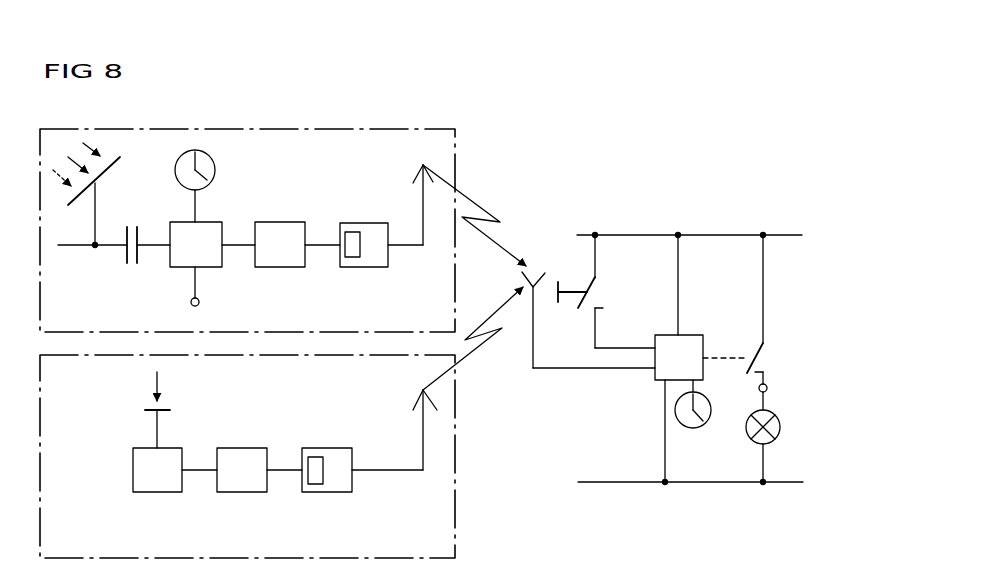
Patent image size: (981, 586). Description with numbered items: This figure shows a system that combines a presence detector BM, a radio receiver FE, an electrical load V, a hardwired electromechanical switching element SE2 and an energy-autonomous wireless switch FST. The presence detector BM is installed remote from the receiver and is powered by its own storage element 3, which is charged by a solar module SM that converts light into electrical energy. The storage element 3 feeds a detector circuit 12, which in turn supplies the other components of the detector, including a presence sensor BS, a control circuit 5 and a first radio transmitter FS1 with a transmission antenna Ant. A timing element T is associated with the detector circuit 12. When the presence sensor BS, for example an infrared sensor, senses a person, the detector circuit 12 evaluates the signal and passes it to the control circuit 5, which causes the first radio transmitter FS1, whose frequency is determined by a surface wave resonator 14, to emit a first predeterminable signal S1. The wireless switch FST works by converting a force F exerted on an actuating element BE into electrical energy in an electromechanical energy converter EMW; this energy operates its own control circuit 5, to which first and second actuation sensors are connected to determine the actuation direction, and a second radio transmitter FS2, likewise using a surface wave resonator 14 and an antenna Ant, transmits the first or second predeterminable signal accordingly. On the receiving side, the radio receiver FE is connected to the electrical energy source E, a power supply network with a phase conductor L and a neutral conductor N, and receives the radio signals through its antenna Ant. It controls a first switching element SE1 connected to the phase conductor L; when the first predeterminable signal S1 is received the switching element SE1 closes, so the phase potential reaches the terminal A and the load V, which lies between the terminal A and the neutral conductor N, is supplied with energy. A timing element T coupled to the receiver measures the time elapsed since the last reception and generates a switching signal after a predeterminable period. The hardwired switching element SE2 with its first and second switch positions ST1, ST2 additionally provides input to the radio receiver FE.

The presence detector BM is at (258, 128).
The wireless switch FST is at (458, 498).
The solar module SM is at (120, 163).
The storage element 3 is at (128, 265).
The detector circuit 12 is at (185, 268).
The timing element T is at (216, 170).
The presence sensor BS is at (199, 301).
The control circuit 5 is at (281, 222).
The first radio transmitter FS1 is at (365, 268).
The second radio transmitter FS2 is at (328, 495).
The surface wave resonator 14 is at (350, 232).
The antenna Ant is at (420, 210).
The first predeterminable signal S1 is at (470, 203).
The phase conductor L is at (699, 236).
The neutral conductor N is at (700, 483).
The electrical energy source E is at (787, 232).
The electromechanical switching element SE2 is at (598, 297).
The first switching element SE1 is at (755, 350).
The first switch position ST1 is at (603, 307).
The second switch position ST2 is at (600, 335).
The radio receiver FE is at (692, 333).
The terminal for electrical load A is at (768, 388).
The electrical load V is at (781, 427).
The electromechanical energy converter EMW is at (160, 495).
The force F is at (168, 386).
The actuating element BE is at (153, 405).